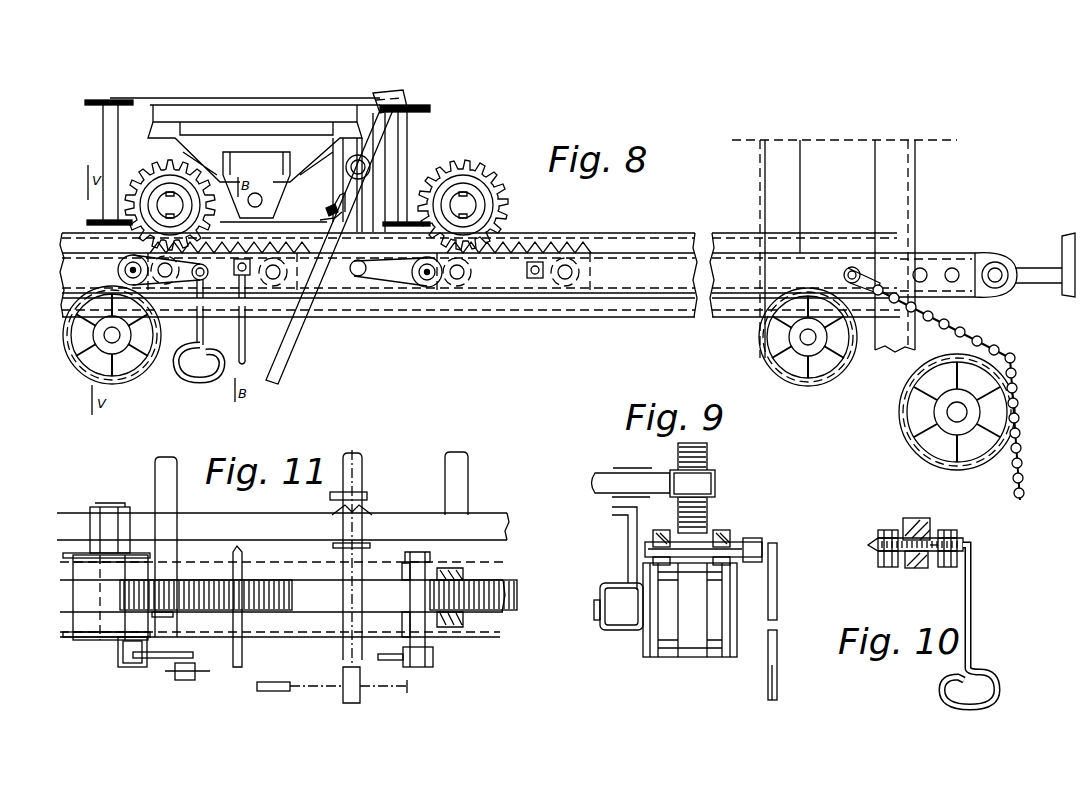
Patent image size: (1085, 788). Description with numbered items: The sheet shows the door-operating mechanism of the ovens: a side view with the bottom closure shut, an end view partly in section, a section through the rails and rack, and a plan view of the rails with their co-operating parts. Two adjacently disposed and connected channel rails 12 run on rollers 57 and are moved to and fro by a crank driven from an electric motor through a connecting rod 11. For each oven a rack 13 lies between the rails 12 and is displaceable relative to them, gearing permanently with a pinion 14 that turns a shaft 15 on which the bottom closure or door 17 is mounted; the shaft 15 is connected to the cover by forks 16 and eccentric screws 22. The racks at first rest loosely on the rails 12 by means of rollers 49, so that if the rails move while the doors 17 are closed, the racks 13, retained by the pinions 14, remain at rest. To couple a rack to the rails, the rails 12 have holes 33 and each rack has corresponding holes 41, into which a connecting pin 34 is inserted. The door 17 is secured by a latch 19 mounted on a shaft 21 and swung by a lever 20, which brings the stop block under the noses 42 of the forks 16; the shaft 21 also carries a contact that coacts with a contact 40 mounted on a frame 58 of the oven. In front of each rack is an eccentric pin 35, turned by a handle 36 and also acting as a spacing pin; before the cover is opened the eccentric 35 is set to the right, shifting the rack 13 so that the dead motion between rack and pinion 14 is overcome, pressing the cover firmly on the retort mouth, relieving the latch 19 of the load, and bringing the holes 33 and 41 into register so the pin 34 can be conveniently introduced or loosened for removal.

In FIG. 8, the connecting rod 11 is at (1030, 265).
In FIG. 8, the channel rails 12 is at (480, 275).
In FIG. 9, the channel rails 12 is at (662, 530).
In FIG. 10, the channel rails 12 is at (889, 530).
In FIG. 11, the channel rails 12 is at (308, 620).
In FIG. 8, the rack 13 is at (530, 245).
In FIG. 9, the rack 13 is at (700, 537).
In FIG. 10, the rack 13 is at (918, 520).
In FIG. 11, the rack 13 is at (515, 582).
In FIG. 8, the pinion 14 is at (150, 170).
In FIG. 9, the pinion 14 is at (710, 470).
In FIG. 11, the pinion 14 is at (205, 572).
In FIG. 8, the shaft 15 is at (140, 197).
In FIG. 9, the shaft 15 is at (603, 478).
In FIG. 11, the shaft 15 is at (176, 495).
In FIG. 8, the forks 16 is at (255, 172).
In FIG. 8, the door 17 is at (256, 185).
In FIG. 8, the latch 19 is at (320, 222).
In FIG. 8, the lever 20 is at (292, 345).
In FIG. 11, the lever 20 is at (311, 682).
In FIG. 8, the shaft 21 is at (371, 168).
In FIG. 11, the shaft 21 is at (362, 482).
In FIG. 8, the eccentric screws 22 is at (258, 194).
In FIG. 8, the holes 33 is at (535, 281).
In FIG. 10, the holes 33 is at (970, 543).
In FIG. 8, the connecting pin 34 is at (247, 330).
In FIG. 10, the connecting pin 34 is at (975, 548).
In FIG. 11, the connecting pin 34 is at (243, 655).
In FIG. 8, the eccentric pin 35 is at (118, 271).
In FIG. 9, the eccentric pin 35 is at (762, 549).
In FIG. 11, the eccentric pin 35 is at (118, 655).
In FIG. 8, the handle 36 is at (199, 330).
In FIG. 9, the handle 36 is at (778, 655).
In FIG. 11, the handle 36 is at (180, 682).
In FIG. 11, the contact 40 is at (366, 508).
In FIG. 10, the holes 41 is at (940, 536).
In FIG. 8, the noses 42 is at (325, 200).
In FIG. 8, the rollers 49 is at (580, 273).
In FIG. 10, the rollers 49 is at (890, 568).
In FIG. 11, the rollers 49 is at (470, 572).
In FIG. 8, the rollers 57 is at (76, 364).
In FIG. 11, the rollers 57 is at (70, 592).
In FIG. 8, the frame 58 is at (405, 180).
In FIG. 11, the frame 58 is at (250, 525).